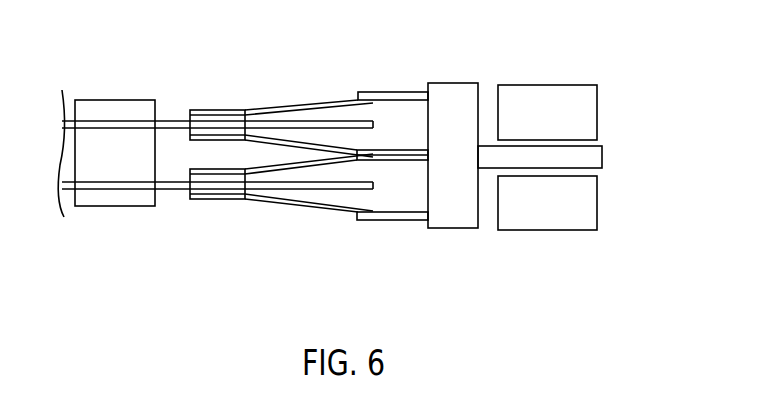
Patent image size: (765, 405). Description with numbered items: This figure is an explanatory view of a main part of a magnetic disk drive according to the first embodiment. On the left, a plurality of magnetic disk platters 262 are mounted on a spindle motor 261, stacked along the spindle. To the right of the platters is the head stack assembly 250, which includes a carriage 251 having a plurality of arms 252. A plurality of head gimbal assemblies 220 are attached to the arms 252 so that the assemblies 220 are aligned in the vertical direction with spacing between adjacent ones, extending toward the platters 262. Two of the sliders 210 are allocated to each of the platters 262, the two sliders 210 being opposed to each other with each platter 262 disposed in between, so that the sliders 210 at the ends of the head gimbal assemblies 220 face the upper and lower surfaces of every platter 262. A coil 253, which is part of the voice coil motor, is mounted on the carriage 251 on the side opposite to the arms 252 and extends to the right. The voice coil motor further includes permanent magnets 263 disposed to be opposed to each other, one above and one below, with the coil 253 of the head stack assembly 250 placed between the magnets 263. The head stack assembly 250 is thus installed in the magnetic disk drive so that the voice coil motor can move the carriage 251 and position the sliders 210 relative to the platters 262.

The slider 210 is at (191, 115).
The head gimbal assembly 220 is at (295, 102).
The head stack assembly 250 is at (510, 118).
The carriage 251 is at (438, 83).
The arm 252 is at (373, 92).
The coil 253 is at (593, 158).
The spindle motor 261 is at (98, 105).
The magnetic disk platter 262 is at (167, 121).
The permanent magnet 263 is at (542, 85).